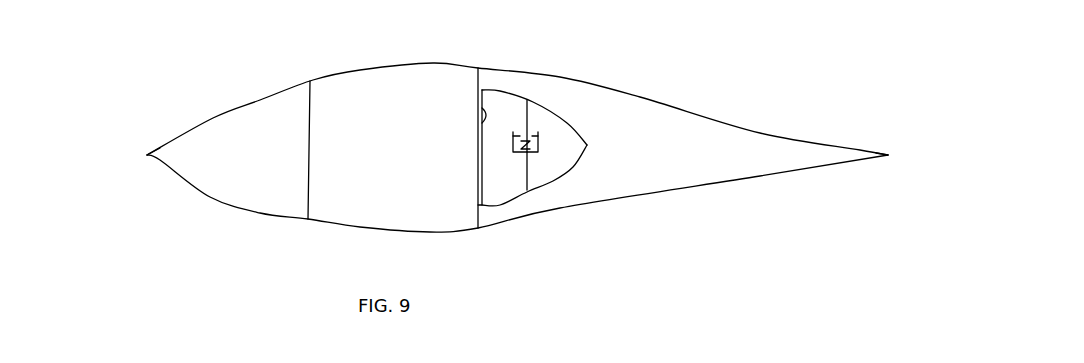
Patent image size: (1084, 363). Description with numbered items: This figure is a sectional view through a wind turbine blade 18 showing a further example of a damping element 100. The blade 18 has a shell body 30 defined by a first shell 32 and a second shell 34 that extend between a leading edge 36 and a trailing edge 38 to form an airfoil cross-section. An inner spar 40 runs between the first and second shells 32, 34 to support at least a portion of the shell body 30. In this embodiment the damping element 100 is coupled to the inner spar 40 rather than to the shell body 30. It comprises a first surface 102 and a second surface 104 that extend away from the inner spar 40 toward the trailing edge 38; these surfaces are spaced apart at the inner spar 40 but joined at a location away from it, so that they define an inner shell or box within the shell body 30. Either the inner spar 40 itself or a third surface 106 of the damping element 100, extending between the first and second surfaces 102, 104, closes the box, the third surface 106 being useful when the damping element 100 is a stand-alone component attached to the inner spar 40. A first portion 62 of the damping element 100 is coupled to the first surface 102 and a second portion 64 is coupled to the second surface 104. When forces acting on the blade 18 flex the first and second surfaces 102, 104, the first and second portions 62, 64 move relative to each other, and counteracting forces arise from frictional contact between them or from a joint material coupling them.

The blade 18 is at (208, 62).
The shell body 30 is at (177, 138).
The first shell 32 is at (257, 100).
The second shell 34 is at (207, 197).
The leading edge 36 is at (142, 153).
The trailing edge 38 is at (890, 153).
The inner spar 40 is at (307, 151).
The first portion 62 is at (530, 118).
The second portion 64 is at (527, 172).
The damping element 100 is at (578, 128).
The first surface 102 is at (503, 90).
The second surface 104 is at (497, 206).
The third surface 106 is at (475, 108).